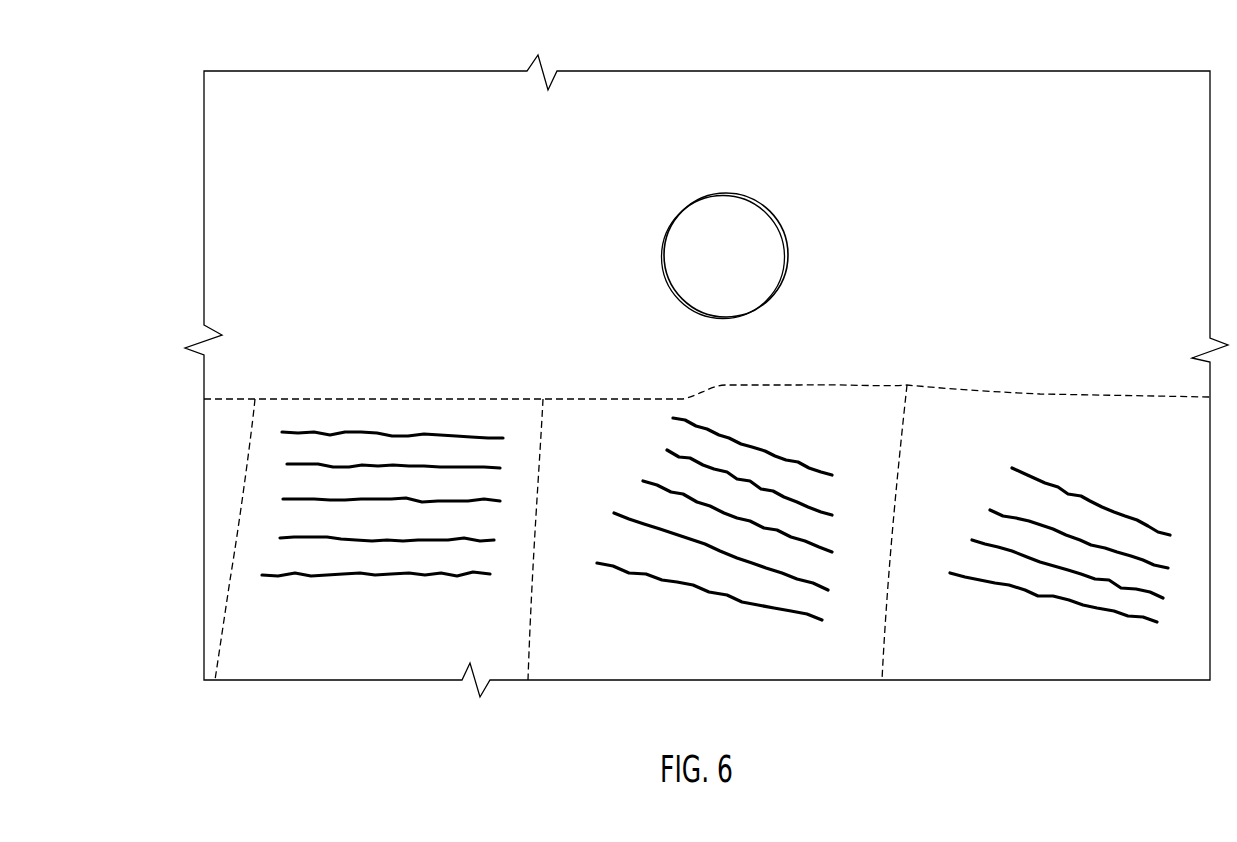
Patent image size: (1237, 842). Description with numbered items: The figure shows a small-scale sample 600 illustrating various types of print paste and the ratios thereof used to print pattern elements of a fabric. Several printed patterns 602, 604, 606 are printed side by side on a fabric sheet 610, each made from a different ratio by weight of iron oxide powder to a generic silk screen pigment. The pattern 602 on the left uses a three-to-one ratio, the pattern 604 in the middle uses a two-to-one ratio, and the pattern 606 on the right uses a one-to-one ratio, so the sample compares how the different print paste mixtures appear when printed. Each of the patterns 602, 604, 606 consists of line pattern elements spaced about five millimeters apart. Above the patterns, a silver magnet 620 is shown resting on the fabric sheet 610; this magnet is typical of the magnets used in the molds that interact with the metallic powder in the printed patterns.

The test panel 600 is at (191, 84).
The fabric sheet 610 is at (1022, 88).
The silver magnet 620 is at (723, 213).
The pattern 602 is at (458, 585).
The pattern 604 is at (773, 615).
The pattern 606 is at (1117, 627).